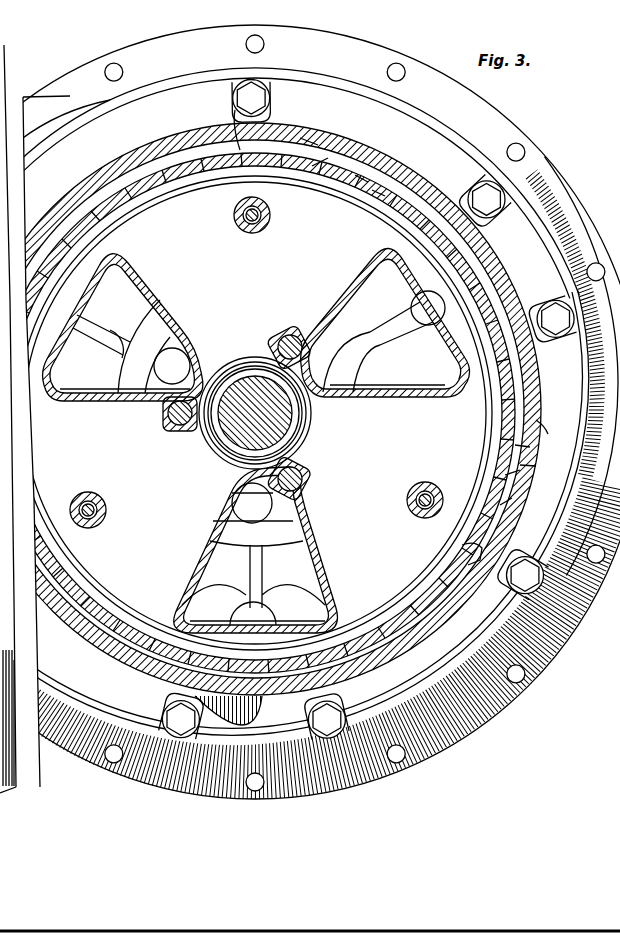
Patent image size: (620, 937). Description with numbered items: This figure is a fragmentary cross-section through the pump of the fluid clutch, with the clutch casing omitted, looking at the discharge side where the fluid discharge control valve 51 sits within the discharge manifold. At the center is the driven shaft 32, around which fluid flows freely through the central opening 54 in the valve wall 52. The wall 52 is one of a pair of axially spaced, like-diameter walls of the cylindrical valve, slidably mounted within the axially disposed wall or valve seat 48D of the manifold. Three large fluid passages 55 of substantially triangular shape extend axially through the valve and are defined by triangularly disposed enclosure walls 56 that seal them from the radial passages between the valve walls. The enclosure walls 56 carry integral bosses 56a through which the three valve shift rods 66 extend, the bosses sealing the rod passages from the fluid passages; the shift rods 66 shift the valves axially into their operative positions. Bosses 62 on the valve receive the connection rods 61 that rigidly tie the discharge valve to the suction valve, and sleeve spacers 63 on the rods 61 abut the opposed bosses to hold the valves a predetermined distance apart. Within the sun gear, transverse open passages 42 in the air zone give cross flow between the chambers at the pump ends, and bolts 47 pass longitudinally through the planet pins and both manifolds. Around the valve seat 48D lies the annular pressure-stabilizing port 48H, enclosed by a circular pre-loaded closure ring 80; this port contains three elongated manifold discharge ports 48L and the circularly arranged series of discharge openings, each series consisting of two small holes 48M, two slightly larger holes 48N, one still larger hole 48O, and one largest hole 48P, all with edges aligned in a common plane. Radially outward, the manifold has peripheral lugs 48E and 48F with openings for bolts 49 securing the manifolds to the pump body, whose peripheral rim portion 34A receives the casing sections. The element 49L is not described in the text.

The peripheral rim portion 34A is at (380, 66).
The bolts 49 is at (246, 88).
The lug 48F is at (225, 112).
The manifold discharge port 48L is at (312, 135).
The largest hole 48P is at (322, 168).
The valve seat wall 48D is at (362, 178).
The larger hole 48O is at (380, 192).
The lug 48E is at (452, 178).
The slightly larger holes 48N is at (432, 229).
The small holes 48M is at (515, 406).
The closure ring 80 is at (546, 428).
The pressure-stabilizing port 48H is at (532, 468).
The lock 49L is at (470, 555).
The valve wall 52 is at (105, 615).
The boss 62 is at (236, 208).
The spacer 63 is at (236, 222).
The connection rod 61 is at (244, 222).
The fluid passage 55 is at (150, 280).
The enclosure wall 56 is at (160, 298).
The transverse open passages 42 is at (182, 345).
The bolt 47 is at (440, 322).
The valve shift rod 66 is at (280, 350).
The boss 56a is at (288, 338).
The driven shaft 32 is at (200, 435).
The central opening 54 is at (238, 430).
The fluid discharge control valve 51 is at (392, 460).